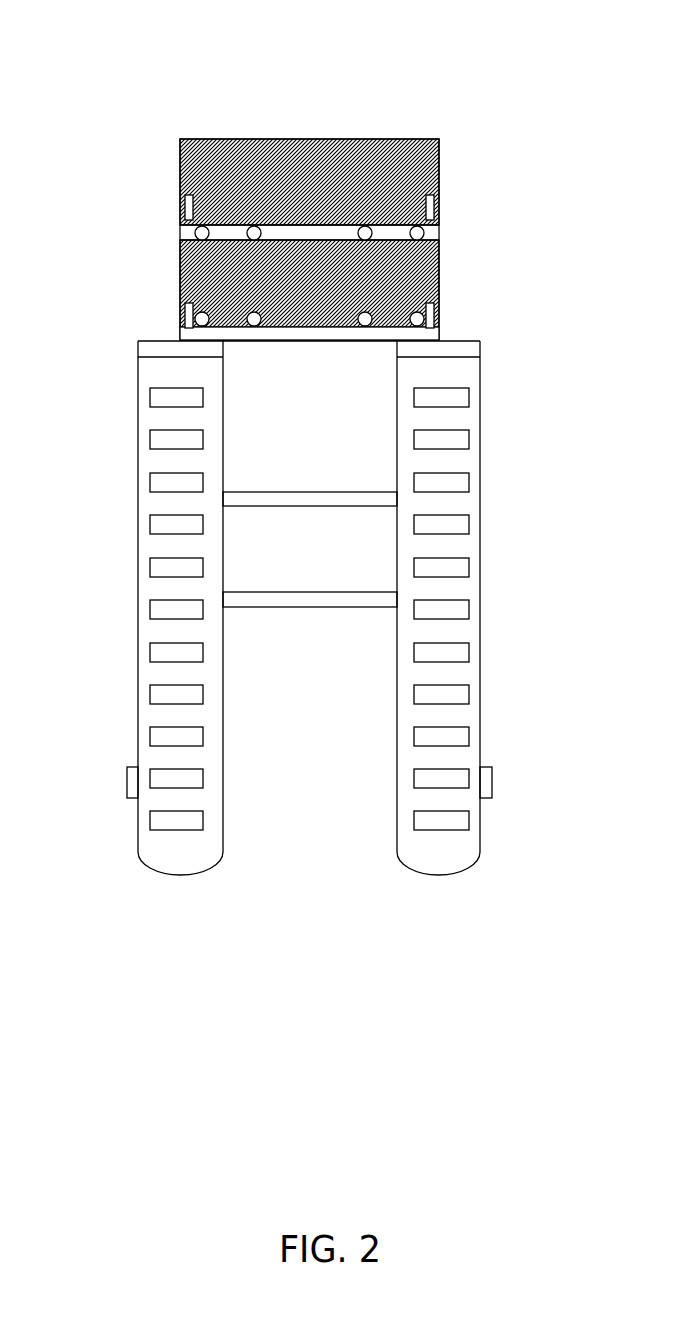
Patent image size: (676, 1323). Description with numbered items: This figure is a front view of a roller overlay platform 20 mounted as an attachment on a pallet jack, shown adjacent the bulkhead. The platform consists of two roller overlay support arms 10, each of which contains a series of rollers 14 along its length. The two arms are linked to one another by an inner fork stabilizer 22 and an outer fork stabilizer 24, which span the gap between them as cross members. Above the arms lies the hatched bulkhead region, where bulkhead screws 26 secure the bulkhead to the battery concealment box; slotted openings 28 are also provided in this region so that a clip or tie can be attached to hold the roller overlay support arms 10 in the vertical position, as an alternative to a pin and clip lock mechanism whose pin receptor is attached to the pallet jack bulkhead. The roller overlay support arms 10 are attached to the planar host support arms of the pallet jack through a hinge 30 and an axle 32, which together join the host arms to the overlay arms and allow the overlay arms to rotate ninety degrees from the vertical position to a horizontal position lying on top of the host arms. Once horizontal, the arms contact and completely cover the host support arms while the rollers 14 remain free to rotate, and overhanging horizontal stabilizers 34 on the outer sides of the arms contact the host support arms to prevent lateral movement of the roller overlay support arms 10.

The roller overlay support arm 10 is at (147, 347).
The roller 14 is at (468, 568).
The block assembly 20 is at (200, 93).
The inner fork stabilizer 22 is at (233, 498).
The outer fork stabilizer 24 is at (238, 598).
The bulkhead screw 26 is at (203, 237).
The slotted opening 28 is at (430, 208).
The hinge 30 is at (183, 338).
The axle 32 is at (430, 333).
The overhanging horizontal stabilizer 34 is at (127, 780).